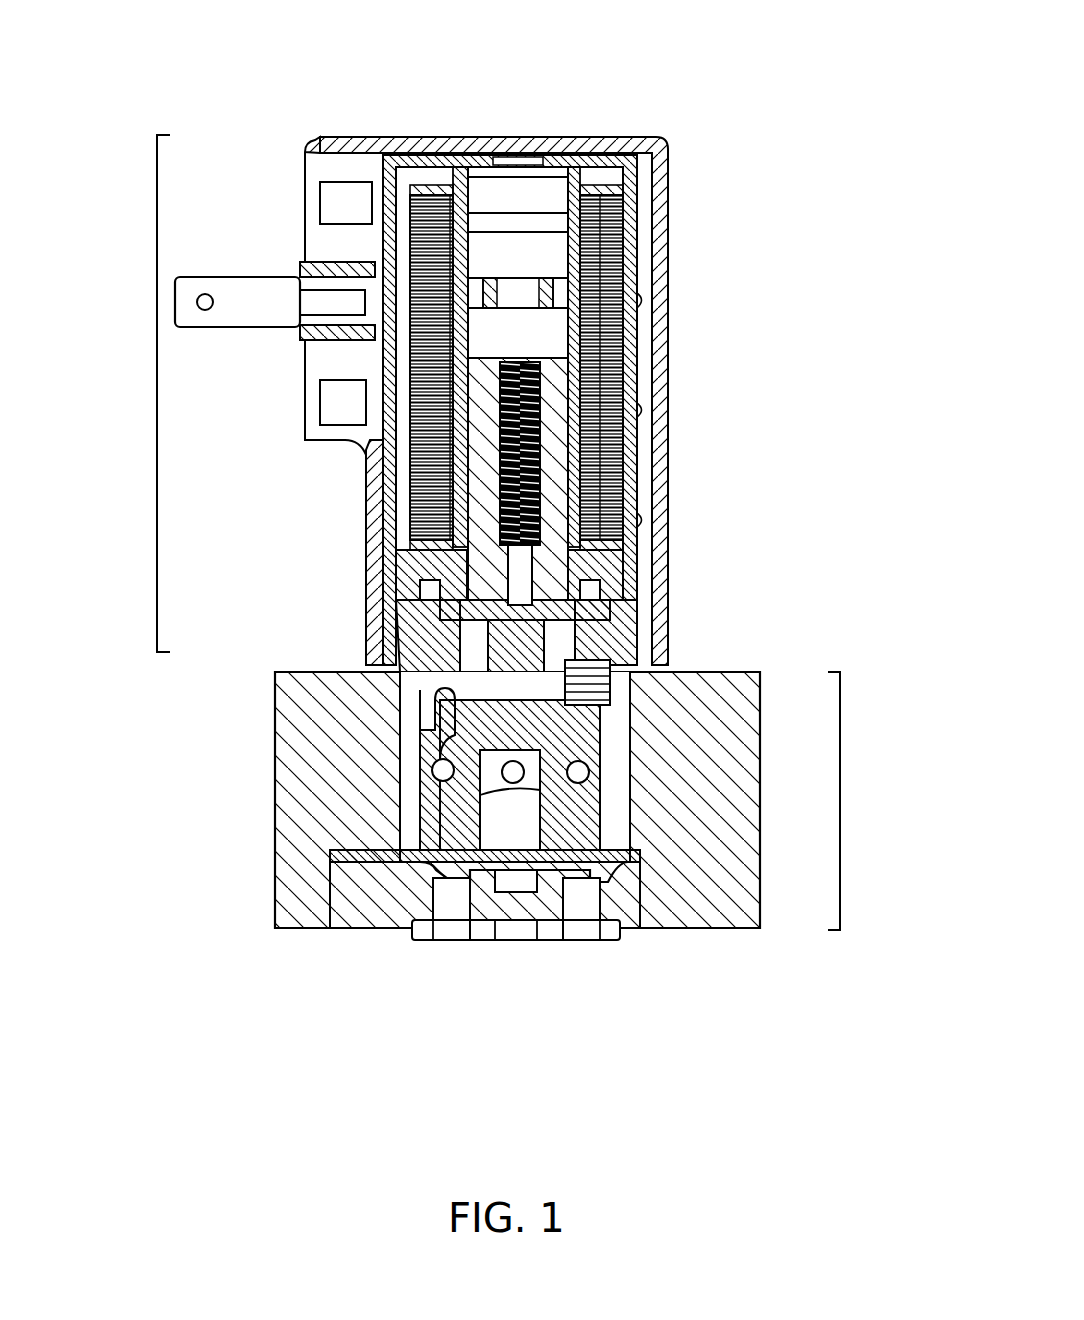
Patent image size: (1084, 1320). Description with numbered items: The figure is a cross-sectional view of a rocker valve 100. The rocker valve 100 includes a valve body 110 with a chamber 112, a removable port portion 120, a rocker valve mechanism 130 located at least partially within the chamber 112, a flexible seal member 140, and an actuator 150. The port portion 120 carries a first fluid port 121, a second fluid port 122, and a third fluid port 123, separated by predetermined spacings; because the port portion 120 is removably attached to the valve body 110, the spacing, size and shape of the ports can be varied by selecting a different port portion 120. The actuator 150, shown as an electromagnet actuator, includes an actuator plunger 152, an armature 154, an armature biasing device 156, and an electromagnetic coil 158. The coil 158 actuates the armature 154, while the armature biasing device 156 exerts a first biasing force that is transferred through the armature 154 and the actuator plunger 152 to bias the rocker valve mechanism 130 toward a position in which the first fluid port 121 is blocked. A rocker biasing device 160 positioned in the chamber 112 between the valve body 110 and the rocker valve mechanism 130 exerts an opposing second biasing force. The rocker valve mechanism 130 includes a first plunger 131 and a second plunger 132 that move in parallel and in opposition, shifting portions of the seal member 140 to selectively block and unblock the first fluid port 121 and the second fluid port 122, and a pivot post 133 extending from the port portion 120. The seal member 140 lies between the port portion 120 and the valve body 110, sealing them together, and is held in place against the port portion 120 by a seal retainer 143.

The rocker valve 100 is at (786, 122).
The valve body 110 is at (275, 745).
The chamber 112 is at (535, 698).
The port portion 120 is at (320, 932).
The first fluid port 121 is at (440, 945).
The second fluid port 122 is at (585, 945).
The third fluid port 123 is at (515, 945).
The rocker valve mechanism 130 is at (840, 795).
The first plunger 131 is at (425, 793).
The second plunger 132 is at (630, 777).
The pivot post 133 is at (510, 745).
The flexible seal member 140 is at (430, 862).
The seal retainer 143 is at (330, 860).
The actuator 150 is at (157, 388).
The actuator plunger 152 is at (415, 700).
The armature 154 is at (555, 425).
The armature biasing device 156 is at (540, 490).
The electromagnetic coil 158 is at (637, 270).
The rocker biasing device 160 is at (610, 707).